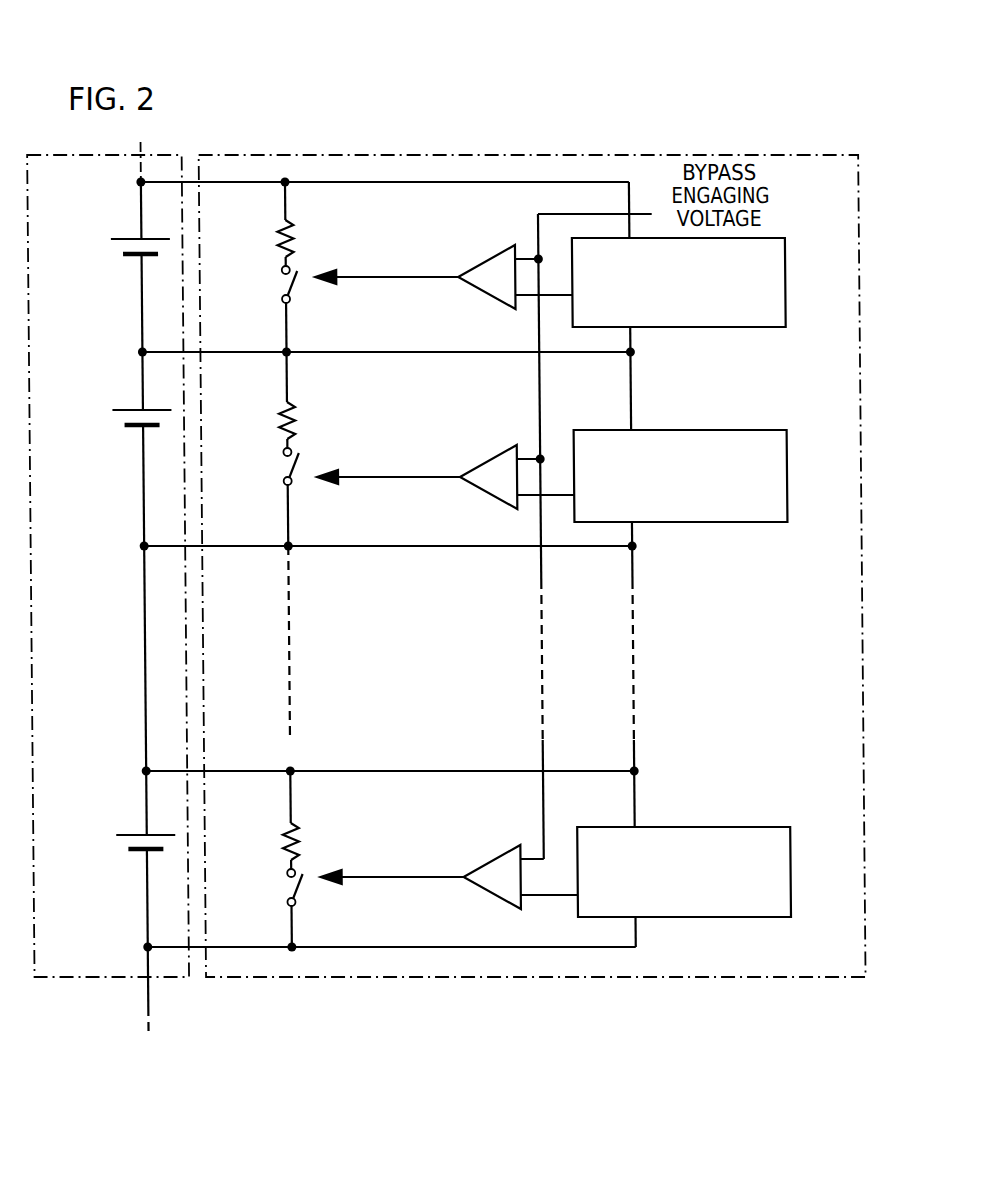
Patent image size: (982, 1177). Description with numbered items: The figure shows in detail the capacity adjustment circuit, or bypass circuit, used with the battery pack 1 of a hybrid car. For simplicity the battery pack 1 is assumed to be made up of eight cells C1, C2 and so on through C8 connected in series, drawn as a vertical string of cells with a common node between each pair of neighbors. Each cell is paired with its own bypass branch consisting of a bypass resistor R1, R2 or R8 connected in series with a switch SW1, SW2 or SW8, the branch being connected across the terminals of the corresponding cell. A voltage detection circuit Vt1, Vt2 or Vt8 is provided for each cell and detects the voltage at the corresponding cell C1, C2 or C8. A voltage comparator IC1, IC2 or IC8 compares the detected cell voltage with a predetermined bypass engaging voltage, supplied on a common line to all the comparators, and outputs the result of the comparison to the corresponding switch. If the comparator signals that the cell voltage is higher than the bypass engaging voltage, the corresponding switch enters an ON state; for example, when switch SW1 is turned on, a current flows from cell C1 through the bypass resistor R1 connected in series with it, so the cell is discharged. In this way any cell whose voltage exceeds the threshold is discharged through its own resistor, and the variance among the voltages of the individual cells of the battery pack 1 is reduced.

The battery pack 1 is at (84, 977).
The cell C1 is at (116, 246).
The cell C2 is at (120, 424).
The cell C8 is at (121, 848).
The bypass resistor R1 is at (262, 238).
The bypass resistor R2 is at (266, 420).
The bypass resistor R8 is at (268, 841).
The switch SW1 is at (263, 284).
The switch SW2 is at (265, 469).
The switch SW8 is at (268, 887).
The voltage comparator IC1 is at (444, 267).
The voltage comparator IC2 is at (446, 470).
The voltage comparator IC8 is at (449, 869).
The voltage detection circuit Vt1 is at (785, 283).
The voltage detection circuit Vt2 is at (785, 475).
The voltage detection circuit Vt8 is at (785, 870).